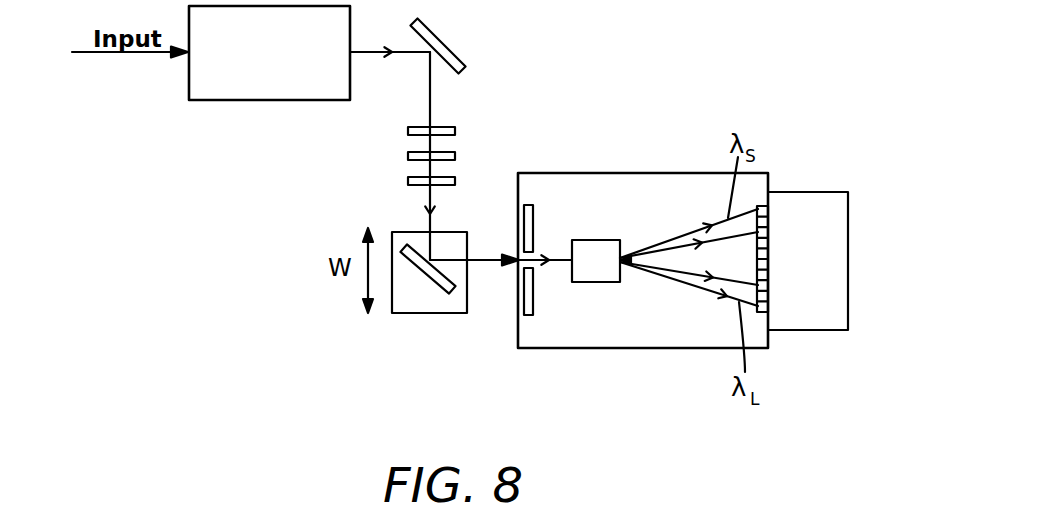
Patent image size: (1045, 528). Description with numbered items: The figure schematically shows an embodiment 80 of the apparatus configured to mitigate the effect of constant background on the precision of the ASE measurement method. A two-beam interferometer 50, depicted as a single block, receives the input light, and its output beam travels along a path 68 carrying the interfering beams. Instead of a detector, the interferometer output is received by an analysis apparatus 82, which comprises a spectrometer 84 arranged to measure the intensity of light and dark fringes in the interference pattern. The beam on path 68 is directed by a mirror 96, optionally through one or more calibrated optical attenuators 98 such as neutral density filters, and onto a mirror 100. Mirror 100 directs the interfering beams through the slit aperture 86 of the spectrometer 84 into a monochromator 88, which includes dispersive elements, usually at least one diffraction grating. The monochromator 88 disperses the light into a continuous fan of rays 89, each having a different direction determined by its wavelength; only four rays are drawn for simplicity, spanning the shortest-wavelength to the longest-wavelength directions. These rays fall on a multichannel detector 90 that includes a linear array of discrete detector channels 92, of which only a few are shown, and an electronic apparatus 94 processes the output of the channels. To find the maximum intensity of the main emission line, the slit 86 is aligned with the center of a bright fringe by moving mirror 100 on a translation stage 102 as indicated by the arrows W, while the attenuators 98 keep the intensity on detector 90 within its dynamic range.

The two-beam interferometer 50 is at (275, 110).
The path 68 is at (378, 53).
The embodiment 80 is at (224, 357).
The analysis apparatus 82 is at (655, 78).
The spectrometer 84 is at (634, 380).
The slit aperture 86 is at (528, 225).
The monochromator 88 is at (585, 282).
The fan of rays 89 is at (692, 283).
The multichannel detector 90 is at (860, 222).
The detector channels 92 is at (768, 228).
The electronic apparatus 94 is at (822, 202).
The mirror 96 is at (455, 57).
The calibrated optical attenuators 98 is at (408, 131).
The mirror 100 is at (433, 286).
The translation stage 102 is at (433, 313).